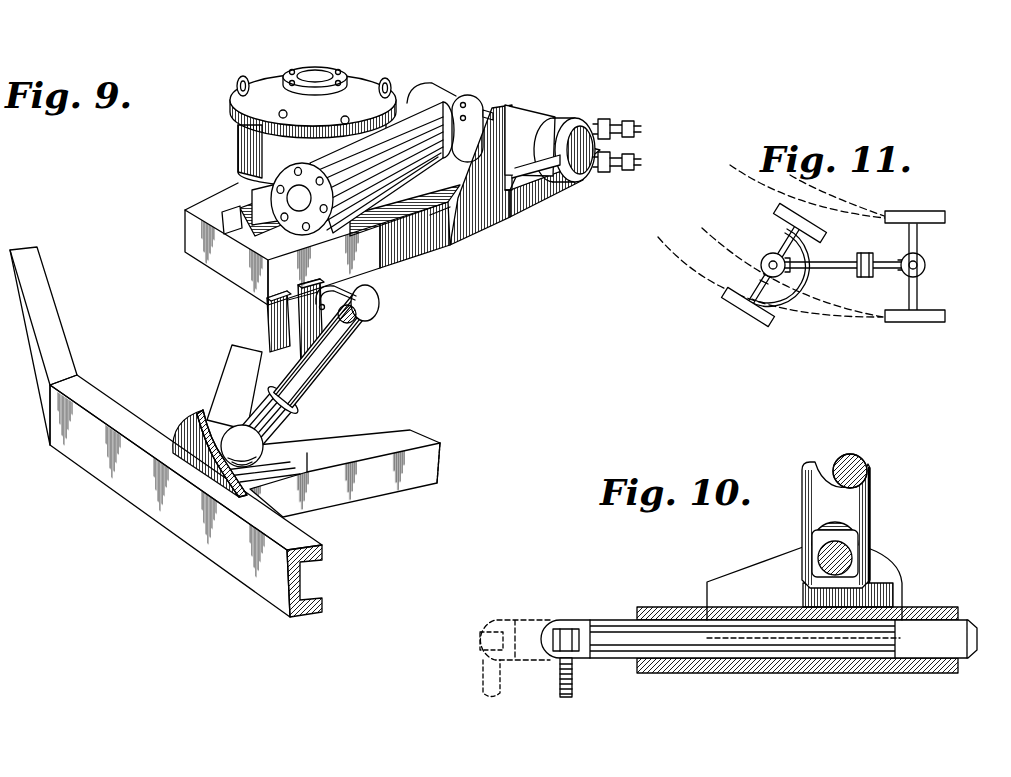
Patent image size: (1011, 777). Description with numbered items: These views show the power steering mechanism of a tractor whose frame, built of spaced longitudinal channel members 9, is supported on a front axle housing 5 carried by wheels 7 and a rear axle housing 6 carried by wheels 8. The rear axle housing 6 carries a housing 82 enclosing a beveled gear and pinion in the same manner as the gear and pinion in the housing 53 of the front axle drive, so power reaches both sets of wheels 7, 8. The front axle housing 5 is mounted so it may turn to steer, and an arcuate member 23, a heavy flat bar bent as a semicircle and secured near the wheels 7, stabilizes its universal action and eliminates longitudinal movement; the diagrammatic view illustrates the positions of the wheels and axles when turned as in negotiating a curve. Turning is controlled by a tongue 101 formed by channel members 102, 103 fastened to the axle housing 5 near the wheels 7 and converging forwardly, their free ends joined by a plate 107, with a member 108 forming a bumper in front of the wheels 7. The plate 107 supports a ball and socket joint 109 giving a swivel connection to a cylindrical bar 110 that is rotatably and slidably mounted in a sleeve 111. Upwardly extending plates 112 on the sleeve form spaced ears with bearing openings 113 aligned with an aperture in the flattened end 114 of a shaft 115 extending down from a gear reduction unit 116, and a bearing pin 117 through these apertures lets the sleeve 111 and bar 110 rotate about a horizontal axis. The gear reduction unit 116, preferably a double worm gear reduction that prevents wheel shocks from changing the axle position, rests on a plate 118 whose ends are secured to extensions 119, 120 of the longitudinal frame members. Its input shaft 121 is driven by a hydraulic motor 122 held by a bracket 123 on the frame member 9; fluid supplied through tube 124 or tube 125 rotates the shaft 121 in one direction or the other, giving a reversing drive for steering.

In FIG. 11, the front axle housing 5 is at (760, 278).
In FIG. 11, the rear axle housing 6 is at (918, 294).
In FIG. 11, the wheels 7 is at (750, 322).
In FIG. 11, the wheels 8 is at (902, 320).
In FIG. 9, the channel member 9 is at (452, 212).
In FIG. 11, the arcuate member 23 is at (782, 300).
In FIG. 11, the housing 53 is at (765, 259).
In FIG. 11, the housing 82 is at (925, 266).
In FIG. 9, the tongue 101 is at (333, 503).
In FIG. 9, the channel member 102 is at (388, 442).
In FIG. 9, the channel member 103 is at (230, 383).
In FIG. 9, the plate 107 is at (287, 462).
In FIG. 9, the bumper member 108 is at (138, 497).
In FIG. 9, the ball and socket joint 109 is at (232, 440).
In FIG. 10, the ball and socket joint 109 is at (567, 603).
In FIG. 9, the cylindrical bar 110 is at (280, 422).
In FIG. 10, the cylindrical bar 110 is at (603, 621).
In FIG. 9, the sleeve 111 is at (307, 394).
In FIG. 10, the sleeve 111 is at (657, 607).
In FIG. 9, the plates 112 is at (336, 354).
In FIG. 10, the plates 112 is at (725, 583).
In FIG. 9, the bearing openings 113 is at (352, 316).
In FIG. 10, the bearing openings 113 is at (852, 560).
In FIG. 9, the flattened end 114 is at (287, 308).
In FIG. 10, the flattened end 114 is at (852, 540).
In FIG. 9, the shaft 115 is at (322, 294).
In FIG. 10, the shaft 115 is at (865, 490).
In FIG. 9, the gear reduction unit 116 is at (242, 149).
In FIG. 9, the bearing pin 117 is at (345, 307).
In FIG. 10, the bearing pin 117 is at (833, 540).
In FIG. 9, the plate 118 is at (232, 222).
In FIG. 9, the extension 119 is at (405, 272).
In FIG. 9, the extension 120 is at (208, 203).
In FIG. 9, the input shaft 121 is at (478, 116).
In FIG. 9, the hydraulic motor 122 is at (577, 117).
In FIG. 9, the bracket 123 is at (543, 84).
In FIG. 9, the tube 124 is at (640, 125).
In FIG. 9, the tube 125 is at (640, 162).